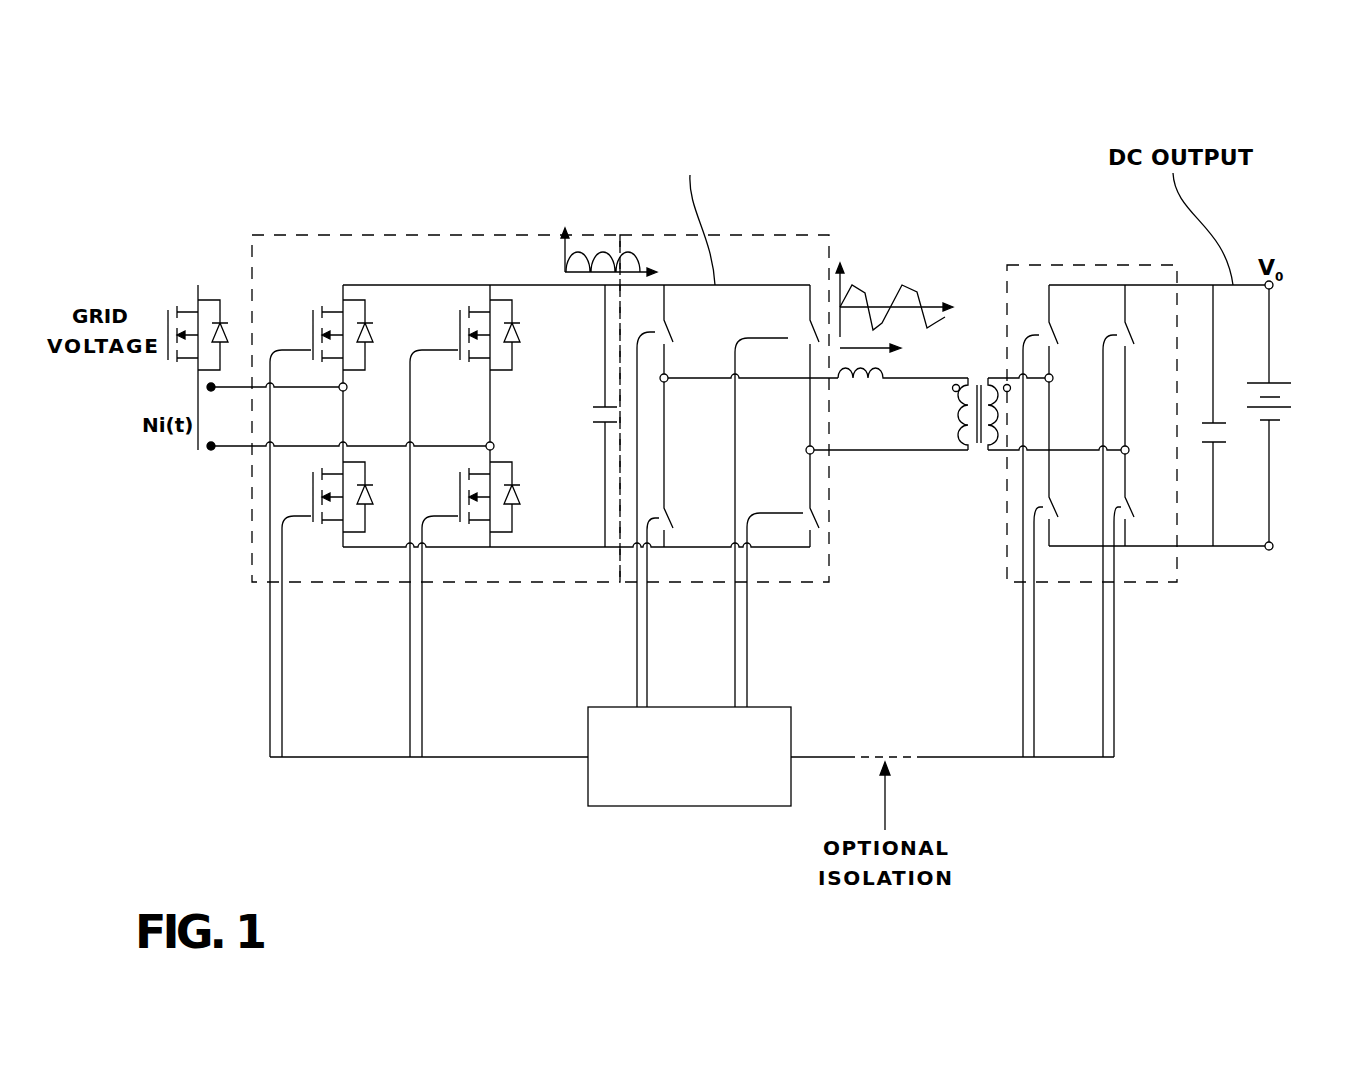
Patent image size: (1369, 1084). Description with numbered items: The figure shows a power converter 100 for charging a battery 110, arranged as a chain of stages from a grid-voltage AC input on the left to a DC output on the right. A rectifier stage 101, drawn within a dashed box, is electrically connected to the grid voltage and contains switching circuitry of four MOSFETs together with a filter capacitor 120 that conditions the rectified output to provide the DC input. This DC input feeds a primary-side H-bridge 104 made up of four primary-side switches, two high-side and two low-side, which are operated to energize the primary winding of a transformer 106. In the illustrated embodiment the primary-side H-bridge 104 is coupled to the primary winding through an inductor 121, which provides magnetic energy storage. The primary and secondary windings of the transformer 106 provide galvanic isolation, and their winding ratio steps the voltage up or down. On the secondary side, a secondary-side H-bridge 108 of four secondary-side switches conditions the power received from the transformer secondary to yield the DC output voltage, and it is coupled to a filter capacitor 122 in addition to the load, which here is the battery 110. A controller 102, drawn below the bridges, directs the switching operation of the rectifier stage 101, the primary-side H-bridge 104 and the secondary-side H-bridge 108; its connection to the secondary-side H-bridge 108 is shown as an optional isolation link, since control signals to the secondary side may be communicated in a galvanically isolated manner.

The power converter 100 is at (496, 163).
The rectifier stage 101 is at (428, 235).
The controller 102 is at (667, 806).
The primary-side H-bridge 104 is at (752, 235).
The transformer 106 is at (946, 484).
The secondary-side H-bridge 108 is at (1078, 265).
The battery 110 is at (1280, 377).
The filter capacitor 120 is at (593, 413).
The inductor 121 is at (873, 380).
The filter capacitor 122 is at (1215, 446).